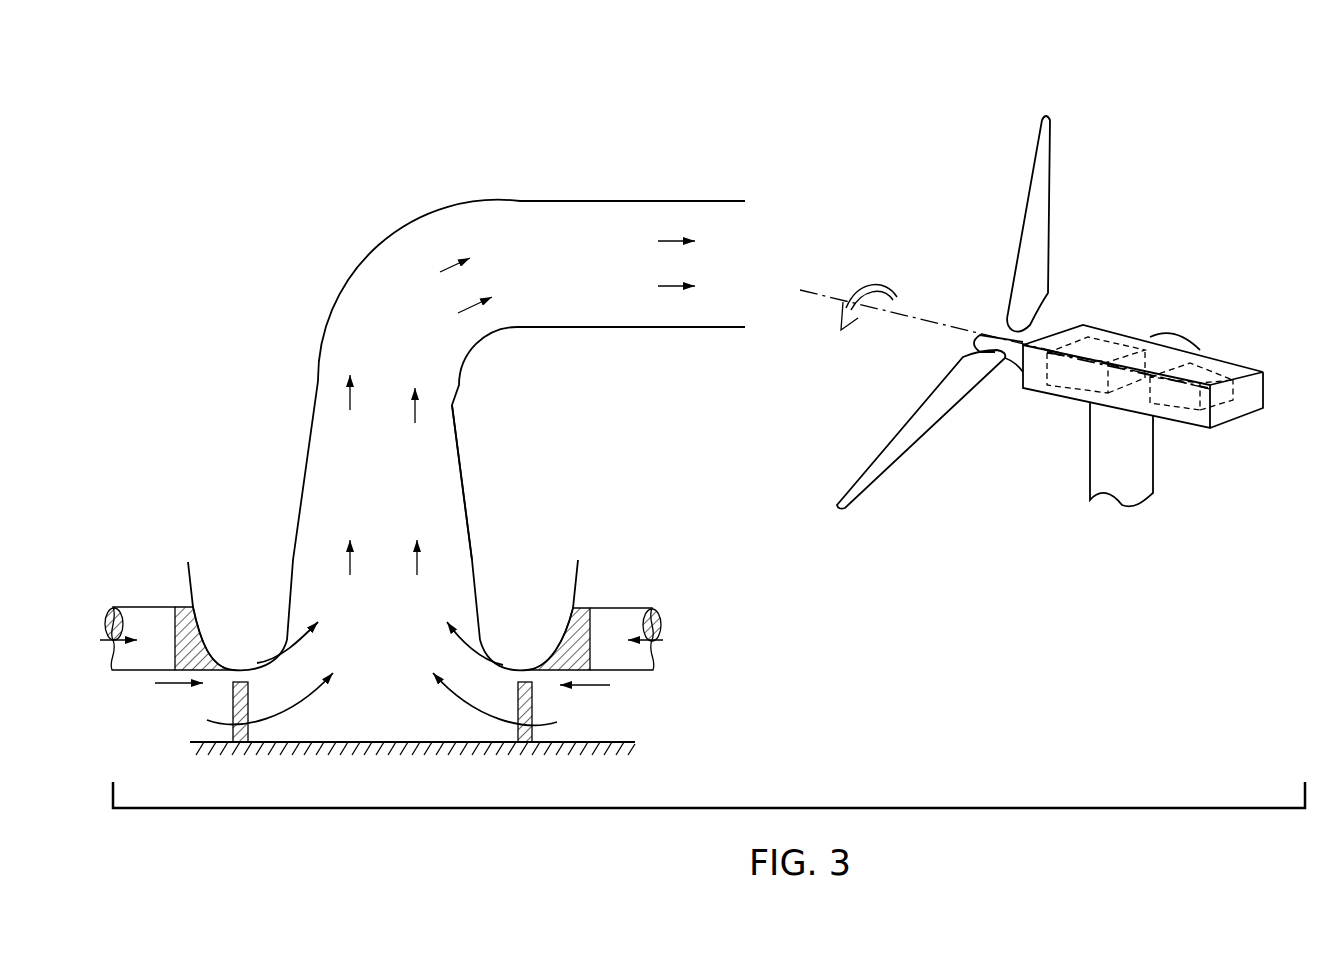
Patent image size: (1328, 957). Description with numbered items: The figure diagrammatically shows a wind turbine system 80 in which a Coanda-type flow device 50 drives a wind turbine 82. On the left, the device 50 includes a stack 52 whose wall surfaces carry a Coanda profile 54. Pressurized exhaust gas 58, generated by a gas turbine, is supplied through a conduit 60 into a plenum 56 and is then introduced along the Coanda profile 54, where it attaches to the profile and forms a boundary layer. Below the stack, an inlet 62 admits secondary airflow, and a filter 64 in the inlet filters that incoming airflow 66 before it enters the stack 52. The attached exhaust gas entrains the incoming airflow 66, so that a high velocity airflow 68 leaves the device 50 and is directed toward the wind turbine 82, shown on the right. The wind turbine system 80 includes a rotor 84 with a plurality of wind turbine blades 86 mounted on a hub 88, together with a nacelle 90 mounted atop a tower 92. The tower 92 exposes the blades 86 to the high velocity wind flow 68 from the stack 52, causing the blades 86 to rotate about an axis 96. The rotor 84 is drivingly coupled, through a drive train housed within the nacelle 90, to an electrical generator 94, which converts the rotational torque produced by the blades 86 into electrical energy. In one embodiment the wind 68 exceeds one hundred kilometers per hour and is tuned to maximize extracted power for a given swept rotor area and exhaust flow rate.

The device 50 is at (326, 279).
The stack 52 is at (463, 475).
The Coanda profile 54 is at (278, 652).
The plenum 56 is at (182, 604).
The exhaust gas 58 is at (296, 650).
The conduit 60 is at (628, 607).
The inlet 62 is at (170, 685).
The filter 64 is at (533, 690).
The incoming airflow 66 is at (308, 702).
The high velocity airflow 68 is at (350, 405).
The wind turbine system 80 is at (360, 86).
The wind turbine 82 is at (1225, 231).
The rotor 84 is at (1077, 312).
The wind turbine blades 86 is at (1050, 195).
The hub 88 is at (1013, 372).
The nacelle 90 is at (1205, 375).
The tower 92 is at (1145, 475).
The electrical generator 94 is at (1217, 400).
The axis 96 is at (813, 292).